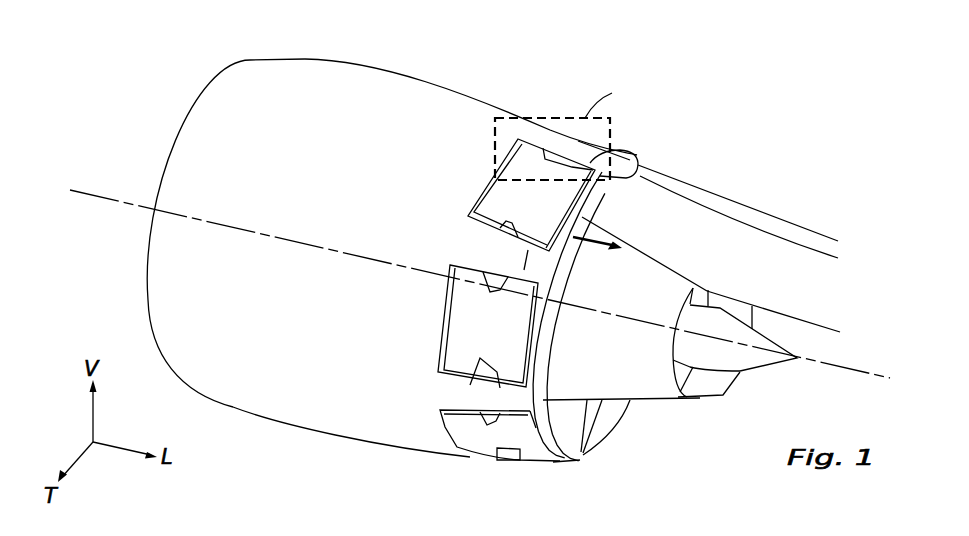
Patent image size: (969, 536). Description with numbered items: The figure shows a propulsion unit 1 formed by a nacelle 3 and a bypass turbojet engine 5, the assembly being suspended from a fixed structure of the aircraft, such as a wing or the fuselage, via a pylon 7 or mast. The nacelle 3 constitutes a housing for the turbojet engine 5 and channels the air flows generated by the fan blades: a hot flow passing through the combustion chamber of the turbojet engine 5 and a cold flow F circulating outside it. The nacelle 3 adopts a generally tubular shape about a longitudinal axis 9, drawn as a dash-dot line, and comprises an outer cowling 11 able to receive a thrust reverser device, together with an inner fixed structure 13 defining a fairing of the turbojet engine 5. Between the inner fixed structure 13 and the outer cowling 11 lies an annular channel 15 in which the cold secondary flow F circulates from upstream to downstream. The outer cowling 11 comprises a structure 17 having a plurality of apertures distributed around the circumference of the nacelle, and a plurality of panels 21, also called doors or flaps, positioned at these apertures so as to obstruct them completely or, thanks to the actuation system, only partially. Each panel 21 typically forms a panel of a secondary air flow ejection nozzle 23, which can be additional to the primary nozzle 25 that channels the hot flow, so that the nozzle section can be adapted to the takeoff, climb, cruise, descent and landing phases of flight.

The propulsion unit 1 is at (172, 48).
The nacelle 3 is at (351, 92).
The bypass turbojet engine 5 is at (643, 388).
The pylon 7 is at (702, 197).
The longitudinal axis 9 is at (888, 380).
The outer cowling 11 is at (483, 145).
The inner fixed structure 13 is at (583, 445).
The annular channel 15 is at (565, 265).
The structure 17 is at (450, 187).
The panels 21 is at (488, 206).
The secondary air flow ejection nozzle 23 is at (512, 373).
The primary nozzle 25 is at (663, 381).